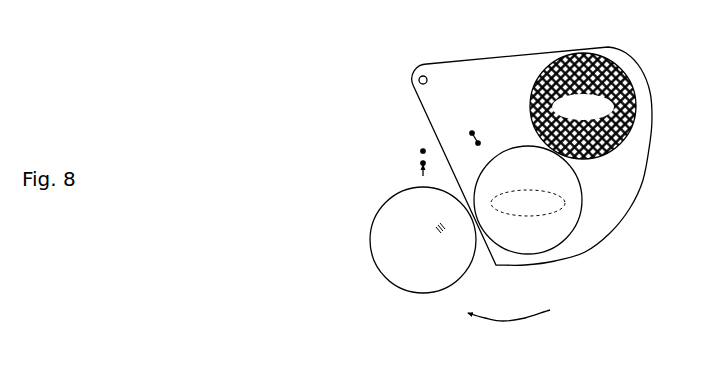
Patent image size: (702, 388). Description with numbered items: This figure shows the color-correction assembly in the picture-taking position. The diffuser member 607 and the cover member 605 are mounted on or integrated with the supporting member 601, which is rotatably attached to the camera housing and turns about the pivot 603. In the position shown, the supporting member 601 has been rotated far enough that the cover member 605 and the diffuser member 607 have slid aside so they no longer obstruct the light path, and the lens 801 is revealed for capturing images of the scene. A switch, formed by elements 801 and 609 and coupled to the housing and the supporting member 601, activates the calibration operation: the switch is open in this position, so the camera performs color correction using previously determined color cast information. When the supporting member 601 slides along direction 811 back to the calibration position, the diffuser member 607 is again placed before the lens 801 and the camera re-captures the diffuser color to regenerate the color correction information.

The supporting member 601 is at (502, 55).
The pivot 603 is at (419, 76).
The cover member 605 is at (531, 93).
The diffuser member 607 is at (585, 194).
The switch 609 is at (476, 137).
The lens 801 is at (421, 147).
The direction 811 is at (512, 320).